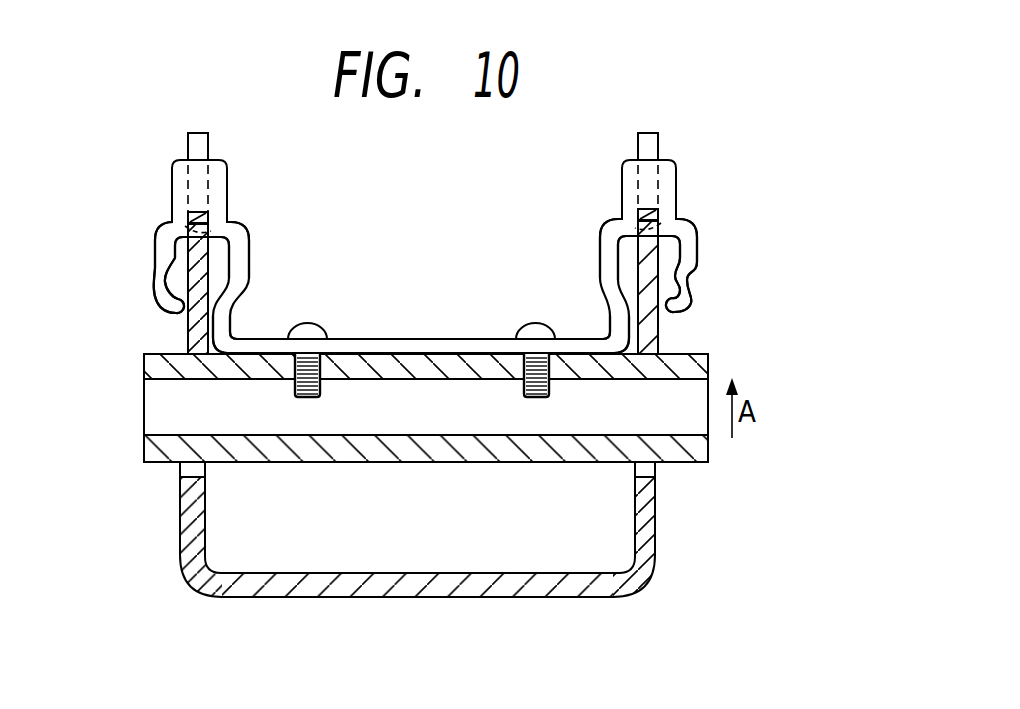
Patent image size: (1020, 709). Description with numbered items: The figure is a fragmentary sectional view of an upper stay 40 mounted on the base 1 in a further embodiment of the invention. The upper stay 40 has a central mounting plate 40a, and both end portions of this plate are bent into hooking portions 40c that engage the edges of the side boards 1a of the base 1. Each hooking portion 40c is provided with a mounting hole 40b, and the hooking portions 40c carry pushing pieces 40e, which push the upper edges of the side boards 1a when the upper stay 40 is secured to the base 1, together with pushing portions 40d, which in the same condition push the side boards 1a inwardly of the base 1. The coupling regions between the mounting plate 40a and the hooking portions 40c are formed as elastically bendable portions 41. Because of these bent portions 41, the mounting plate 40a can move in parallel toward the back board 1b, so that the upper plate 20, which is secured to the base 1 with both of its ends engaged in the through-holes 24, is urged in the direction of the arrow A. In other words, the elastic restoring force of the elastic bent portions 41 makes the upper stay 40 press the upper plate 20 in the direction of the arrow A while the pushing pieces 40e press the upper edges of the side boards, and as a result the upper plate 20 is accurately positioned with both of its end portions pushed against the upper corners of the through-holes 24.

The base 1 is at (404, 608).
The side board 1a is at (180, 523).
The back board 1b is at (528, 598).
The upper plate 20 is at (360, 475).
The through-hole 24 is at (206, 467).
The upper stay 40 is at (410, 318).
The mounting plate 40a is at (478, 338).
The mounting hole 40b is at (187, 220).
The hooking portion 40c is at (242, 243).
The pushing portion 40d is at (168, 294).
The pushing piece 40e is at (226, 184).
The elastically bendable portion 41 is at (243, 325).